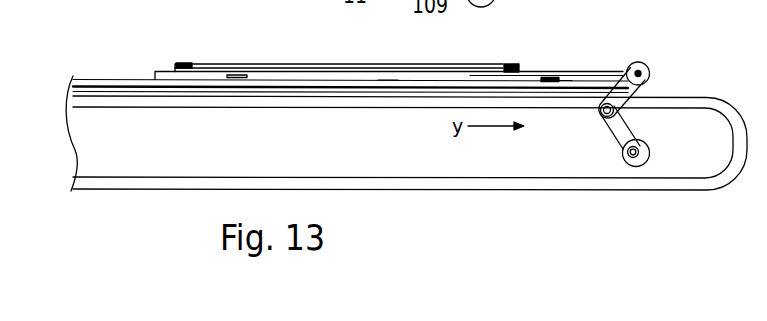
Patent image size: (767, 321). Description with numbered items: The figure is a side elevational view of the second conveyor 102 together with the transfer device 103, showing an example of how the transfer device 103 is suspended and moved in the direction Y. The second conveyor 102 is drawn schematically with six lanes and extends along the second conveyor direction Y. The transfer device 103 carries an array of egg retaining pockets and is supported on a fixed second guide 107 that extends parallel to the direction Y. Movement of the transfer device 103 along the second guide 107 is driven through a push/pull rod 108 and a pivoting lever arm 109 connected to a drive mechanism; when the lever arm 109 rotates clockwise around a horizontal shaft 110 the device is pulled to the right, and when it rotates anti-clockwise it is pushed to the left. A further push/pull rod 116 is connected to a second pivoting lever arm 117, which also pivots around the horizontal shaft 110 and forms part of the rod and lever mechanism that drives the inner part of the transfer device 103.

The second conveyor 102 is at (659, 101).
The transfer device 103 is at (330, 62).
The second guide 107 is at (387, 82).
The push/pull rod 108 is at (561, 80).
The pivoting lever arm 109 is at (641, 128).
The horizontal shaft 110 is at (603, 118).
The further push/pull rod 116 is at (546, 70).
The pivoting lever arm 117 is at (618, 90).